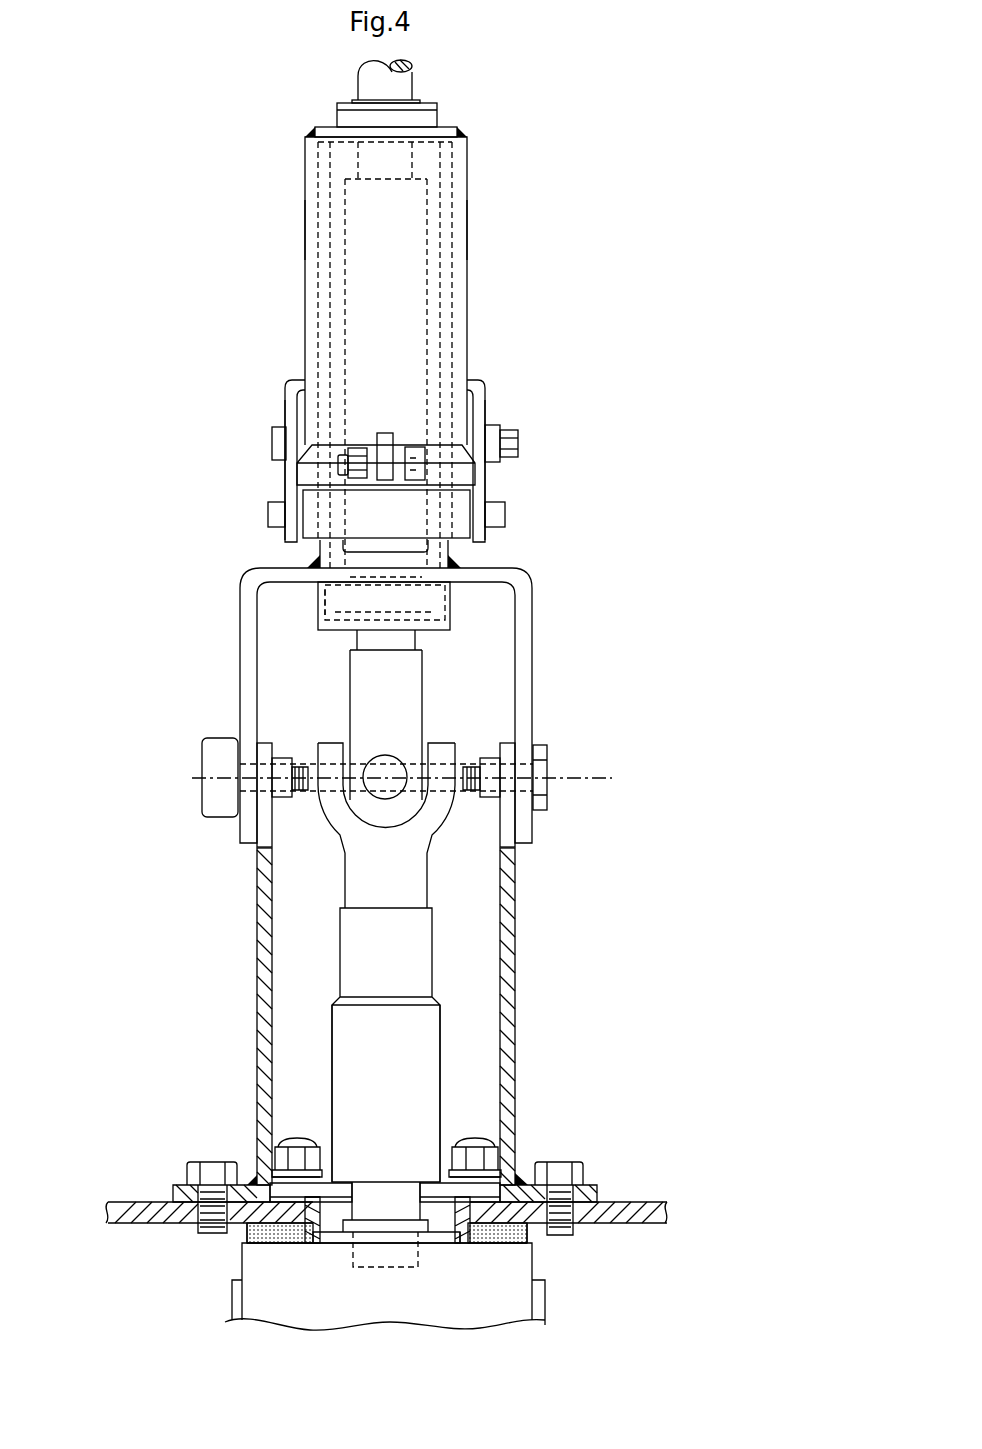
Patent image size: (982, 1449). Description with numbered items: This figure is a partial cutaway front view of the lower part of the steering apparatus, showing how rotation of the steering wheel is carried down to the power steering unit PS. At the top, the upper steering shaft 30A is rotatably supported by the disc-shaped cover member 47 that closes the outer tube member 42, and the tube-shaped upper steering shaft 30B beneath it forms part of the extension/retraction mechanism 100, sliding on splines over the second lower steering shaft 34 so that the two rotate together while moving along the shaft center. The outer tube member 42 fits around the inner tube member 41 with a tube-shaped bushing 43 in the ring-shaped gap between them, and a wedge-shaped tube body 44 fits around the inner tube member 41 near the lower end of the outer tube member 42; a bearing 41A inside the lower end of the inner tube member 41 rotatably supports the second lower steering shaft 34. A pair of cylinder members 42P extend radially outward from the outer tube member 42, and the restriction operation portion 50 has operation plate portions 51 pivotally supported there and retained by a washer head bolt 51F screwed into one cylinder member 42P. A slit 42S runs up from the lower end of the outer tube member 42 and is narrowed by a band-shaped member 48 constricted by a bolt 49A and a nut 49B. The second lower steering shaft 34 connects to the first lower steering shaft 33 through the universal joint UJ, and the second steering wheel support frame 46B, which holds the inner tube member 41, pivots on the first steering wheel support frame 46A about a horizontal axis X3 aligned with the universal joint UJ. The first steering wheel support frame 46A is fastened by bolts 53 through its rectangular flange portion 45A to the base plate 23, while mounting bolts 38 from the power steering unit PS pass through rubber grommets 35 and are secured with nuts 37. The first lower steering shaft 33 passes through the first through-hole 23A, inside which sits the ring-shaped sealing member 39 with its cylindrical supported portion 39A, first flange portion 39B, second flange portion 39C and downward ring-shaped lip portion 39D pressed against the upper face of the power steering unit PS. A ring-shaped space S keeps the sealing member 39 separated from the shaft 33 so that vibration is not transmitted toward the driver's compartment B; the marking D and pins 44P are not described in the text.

The upper steering shaft 30A is at (412, 83).
The cover member 47 is at (325, 127).
The outer tube member 42 is at (468, 200).
The extension/retraction mechanism 100 is at (474, 262).
The upper steering shaft 30B is at (343, 277).
The bushing 43 is at (305, 355).
The bolt 49A is at (415, 446).
The restriction operation portion 50 is at (486, 387).
The cylinder members 42P is at (274, 440).
The slit 42S is at (388, 440).
The washer head bolt 51F is at (519, 443).
The operation plate portions 51 is at (287, 478).
The band-shaped member 48 is at (470, 474).
The pin 44P is at (268, 514).
The nut 49B is at (358, 478).
The inner tube member 41 is at (320, 548).
The wedge-shaped tube body 44 is at (394, 544).
The bearing 41A is at (318, 600).
The second lower steering shaft 34 is at (412, 638).
The second steering wheel support frame 46B is at (533, 671).
The universal joint UJ is at (348, 732).
The horizontal axis X3 is at (418, 778).
The first steering wheel support frame 46A is at (515, 976).
The first lower steering shaft 33 is at (338, 1057).
The driver's compartment B is at (557, 1099).
The mounting bolts 38 is at (293, 1138).
The nuts 37 is at (340, 1180).
The bolts 53 is at (192, 1168).
The first flange portion 39B is at (309, 1198).
The ring-shaped space S is at (338, 1207).
The ring-shaped sealing member 39 is at (466, 1196).
The base plate 23 is at (133, 1205).
The flange portion 45A is at (600, 1195).
The grommets 35 is at (247, 1228).
The ring-shaped lip portion 39D is at (305, 1243).
The supported portion 39A is at (343, 1225).
The first through-hole 23A is at (452, 1215).
The second flange portion 39C is at (476, 1231).
The power steering unit PS is at (235, 1303).
The direction D is at (588, 1314).